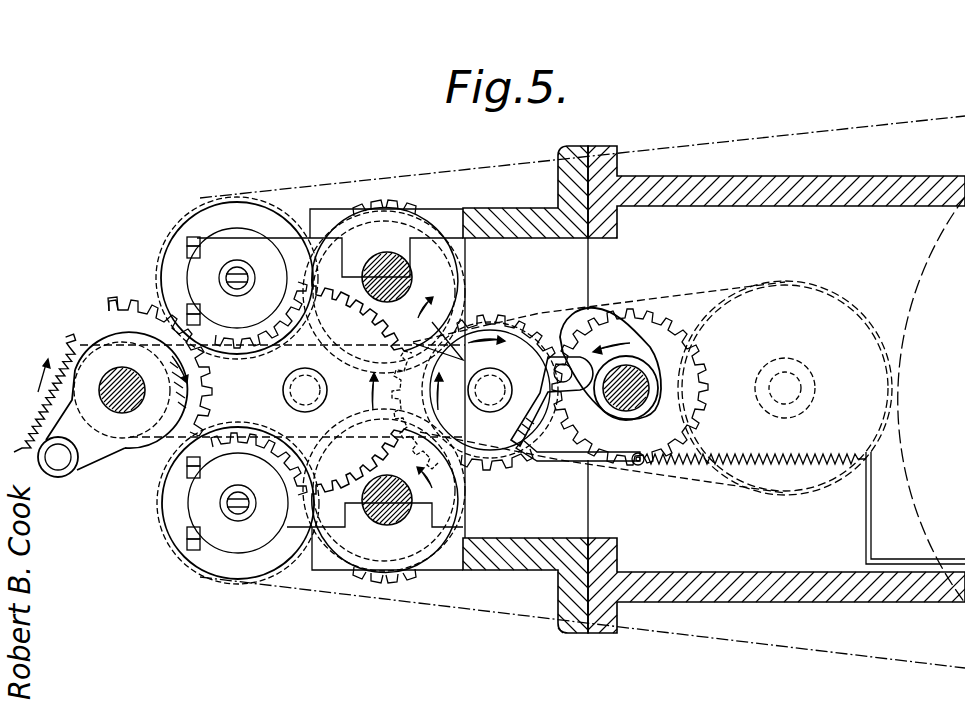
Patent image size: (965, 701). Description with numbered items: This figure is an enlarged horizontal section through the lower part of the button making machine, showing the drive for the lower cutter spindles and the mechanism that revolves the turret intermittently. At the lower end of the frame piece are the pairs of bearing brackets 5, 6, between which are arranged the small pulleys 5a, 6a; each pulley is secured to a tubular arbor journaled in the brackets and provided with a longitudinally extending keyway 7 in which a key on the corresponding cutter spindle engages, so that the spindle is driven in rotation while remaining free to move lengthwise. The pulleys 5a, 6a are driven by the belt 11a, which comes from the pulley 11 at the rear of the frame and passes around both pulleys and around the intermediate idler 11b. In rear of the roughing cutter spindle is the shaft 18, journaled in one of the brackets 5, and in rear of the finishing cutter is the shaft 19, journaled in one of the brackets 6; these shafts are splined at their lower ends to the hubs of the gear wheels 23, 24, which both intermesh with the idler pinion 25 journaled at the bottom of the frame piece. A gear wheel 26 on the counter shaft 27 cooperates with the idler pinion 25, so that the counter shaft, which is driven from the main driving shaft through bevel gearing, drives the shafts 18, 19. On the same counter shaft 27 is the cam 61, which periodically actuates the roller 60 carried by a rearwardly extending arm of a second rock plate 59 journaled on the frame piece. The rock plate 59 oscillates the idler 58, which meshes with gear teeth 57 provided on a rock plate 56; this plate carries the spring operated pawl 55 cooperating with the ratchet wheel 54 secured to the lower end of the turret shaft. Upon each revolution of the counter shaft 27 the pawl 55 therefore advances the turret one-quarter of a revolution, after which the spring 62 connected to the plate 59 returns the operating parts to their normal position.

The bracket 5 is at (247, 288).
The pulley 5a is at (180, 236).
The bracket 6 is at (247, 493).
The pulley 6a is at (212, 557).
The keyway 7 is at (237, 268).
The pulley 11 is at (930, 255).
The belt 11a is at (716, 292).
The idler 11b is at (856, 363).
The shaft 18 is at (390, 262).
The shaft 19 is at (396, 518).
The gear wheel 23 is at (393, 199).
The gear wheel 24 is at (380, 585).
The idler pinion 25 is at (517, 336).
The gear wheel 26 is at (663, 308).
The counter shaft 27 is at (633, 398).
The ratchet wheel 54 is at (107, 362).
The pawl 55 is at (60, 412).
The rock plate 56 is at (87, 445).
The gear teeth 57 is at (140, 312).
The idler 58 is at (286, 390).
The second rock plate 59 is at (493, 412).
The roller 60 is at (552, 401).
The cam 61 is at (603, 330).
The spring 62 is at (808, 451).